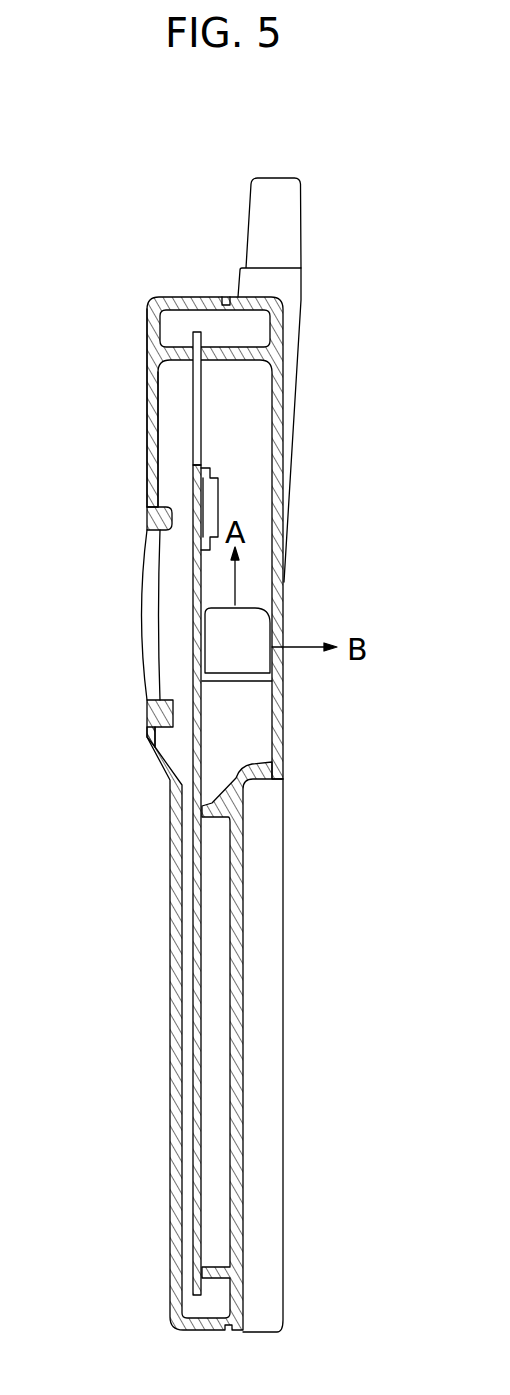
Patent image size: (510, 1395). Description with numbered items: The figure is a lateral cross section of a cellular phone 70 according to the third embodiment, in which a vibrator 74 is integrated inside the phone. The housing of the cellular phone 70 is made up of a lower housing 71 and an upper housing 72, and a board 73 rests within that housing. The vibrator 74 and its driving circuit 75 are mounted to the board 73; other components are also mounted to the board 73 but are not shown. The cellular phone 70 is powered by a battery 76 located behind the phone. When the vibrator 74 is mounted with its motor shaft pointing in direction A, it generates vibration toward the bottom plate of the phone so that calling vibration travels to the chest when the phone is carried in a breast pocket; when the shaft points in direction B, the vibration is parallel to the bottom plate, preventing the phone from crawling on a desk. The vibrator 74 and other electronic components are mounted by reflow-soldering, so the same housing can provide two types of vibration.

The cellular phone 70 is at (133, 623).
The lower housing 71 is at (283, 395).
The upper housing 72 is at (157, 397).
The board 73 is at (200, 731).
The vibrator 74 is at (255, 629).
The driving circuit 75 is at (218, 502).
The battery 76 is at (263, 1060).